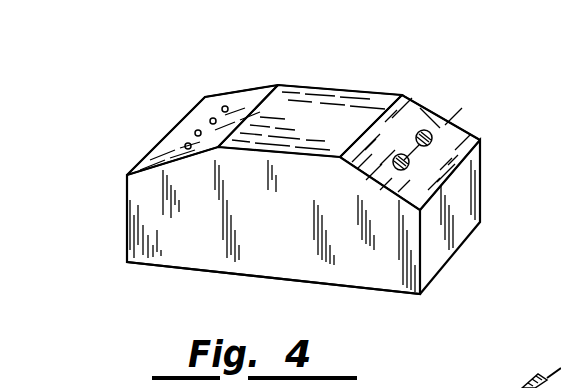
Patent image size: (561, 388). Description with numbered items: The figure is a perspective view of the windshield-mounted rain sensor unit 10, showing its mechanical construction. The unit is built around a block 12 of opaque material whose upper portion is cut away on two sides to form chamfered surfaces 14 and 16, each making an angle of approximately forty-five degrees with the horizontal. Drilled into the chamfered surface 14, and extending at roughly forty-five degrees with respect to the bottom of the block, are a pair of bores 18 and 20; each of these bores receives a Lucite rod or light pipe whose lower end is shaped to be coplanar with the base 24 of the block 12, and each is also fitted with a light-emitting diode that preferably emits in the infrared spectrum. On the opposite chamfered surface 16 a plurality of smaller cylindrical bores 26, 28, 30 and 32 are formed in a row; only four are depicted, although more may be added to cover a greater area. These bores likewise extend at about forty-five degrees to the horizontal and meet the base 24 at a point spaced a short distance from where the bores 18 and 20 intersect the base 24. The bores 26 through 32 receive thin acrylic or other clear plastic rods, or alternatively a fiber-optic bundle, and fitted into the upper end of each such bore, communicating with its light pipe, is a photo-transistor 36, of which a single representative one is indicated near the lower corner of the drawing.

The rain sensor unit 10 is at (298, 73).
The block 12 is at (363, 88).
The chamfered surface 14 is at (405, 112).
The chamfered surface 16 is at (150, 150).
The bore 18 is at (410, 163).
The bore 20 is at (432, 137).
The base 24 is at (182, 269).
The cylindrical bore 26 is at (186, 144).
The cylindrical bore 28 is at (196, 131).
The cylindrical bore 30 is at (212, 119).
The cylindrical bore 32 is at (225, 106).
The photo-transistor 36 is at (530, 384).